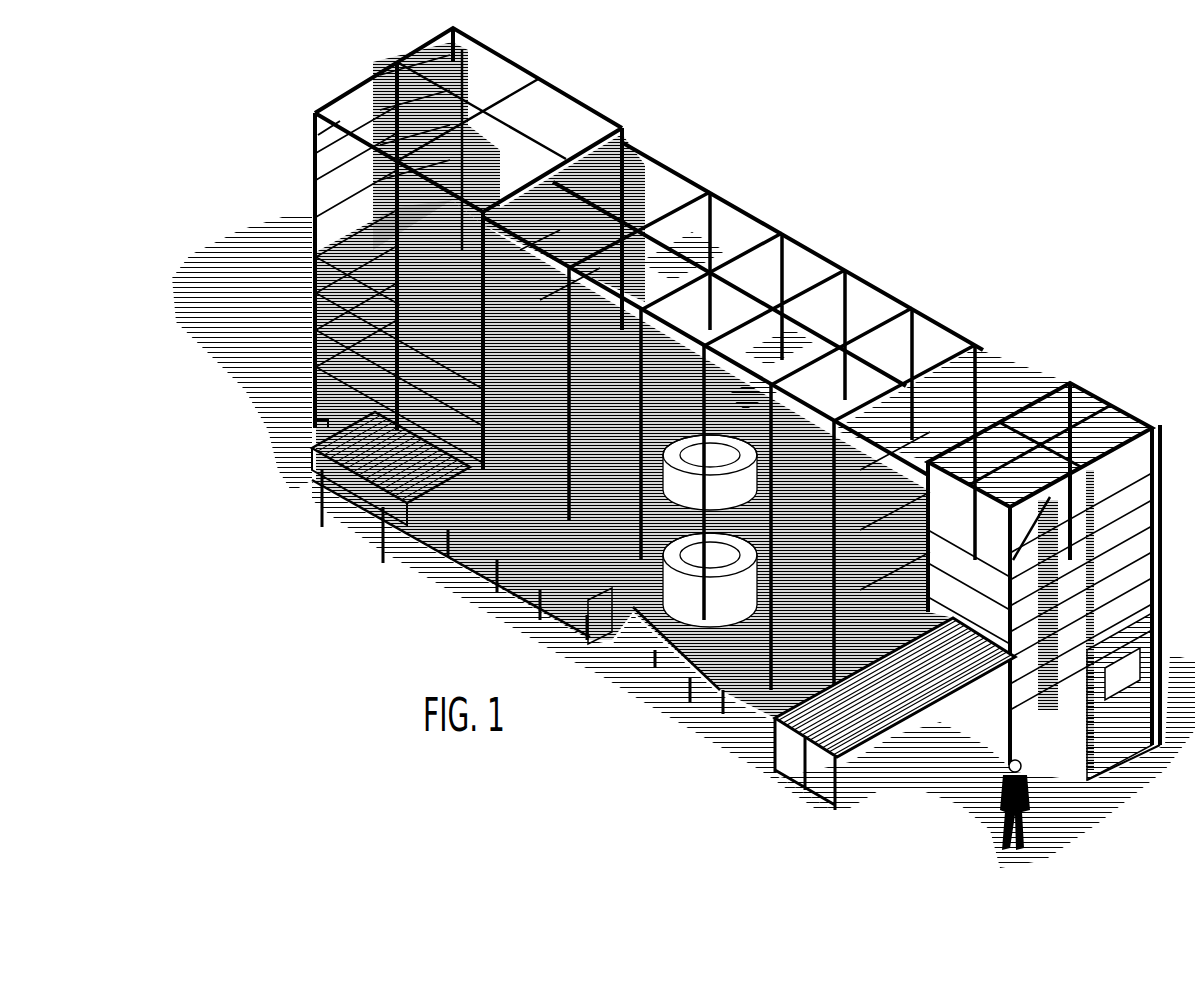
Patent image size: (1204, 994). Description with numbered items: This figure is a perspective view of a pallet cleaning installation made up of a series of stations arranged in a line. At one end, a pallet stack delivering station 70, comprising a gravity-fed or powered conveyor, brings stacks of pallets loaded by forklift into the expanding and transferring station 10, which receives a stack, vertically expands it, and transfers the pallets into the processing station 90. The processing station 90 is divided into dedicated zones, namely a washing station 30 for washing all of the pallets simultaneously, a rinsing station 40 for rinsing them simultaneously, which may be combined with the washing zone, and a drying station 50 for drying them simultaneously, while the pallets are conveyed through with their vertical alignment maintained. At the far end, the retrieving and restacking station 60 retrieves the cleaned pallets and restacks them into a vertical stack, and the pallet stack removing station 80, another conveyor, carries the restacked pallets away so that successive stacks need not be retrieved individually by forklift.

The expanding and transferring station 10 is at (472, 13).
The washing station 30 is at (712, 184).
The rinsing station 40 is at (843, 259).
The drying station 50 is at (970, 327).
The retrieving and restacking station 60 is at (1005, 312).
The pallet stack delivering station 70 is at (300, 497).
The pallet stack removing station 80 is at (870, 770).
The processing station 90 is at (722, 76).